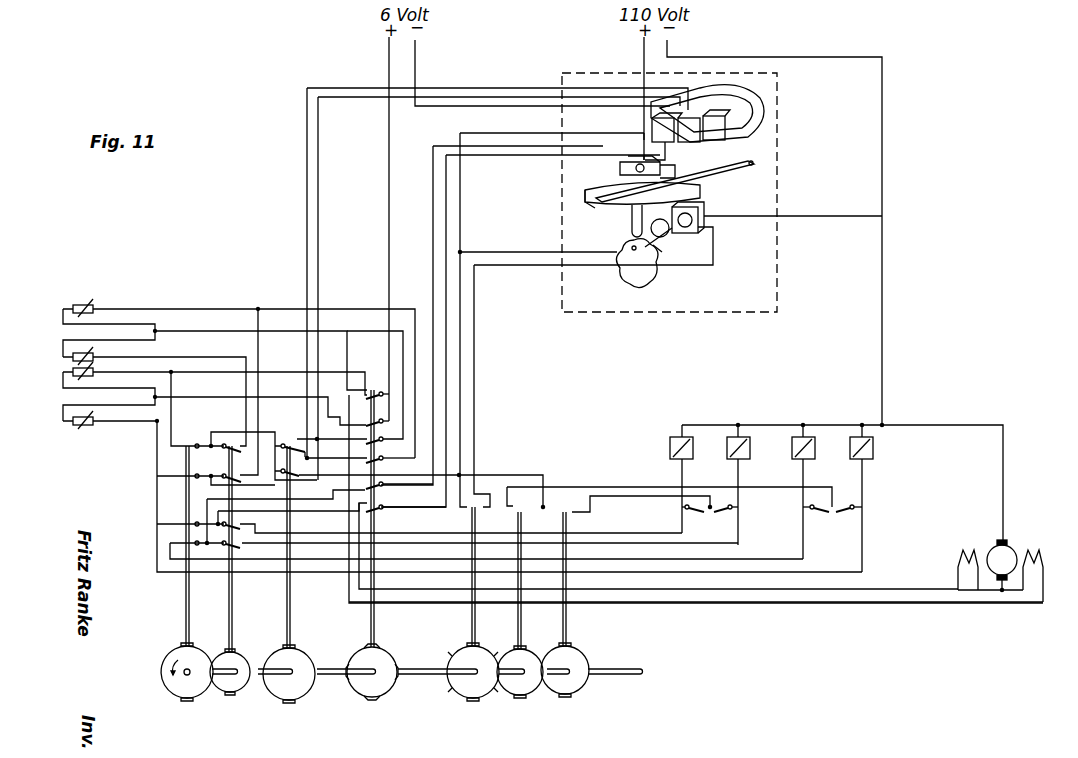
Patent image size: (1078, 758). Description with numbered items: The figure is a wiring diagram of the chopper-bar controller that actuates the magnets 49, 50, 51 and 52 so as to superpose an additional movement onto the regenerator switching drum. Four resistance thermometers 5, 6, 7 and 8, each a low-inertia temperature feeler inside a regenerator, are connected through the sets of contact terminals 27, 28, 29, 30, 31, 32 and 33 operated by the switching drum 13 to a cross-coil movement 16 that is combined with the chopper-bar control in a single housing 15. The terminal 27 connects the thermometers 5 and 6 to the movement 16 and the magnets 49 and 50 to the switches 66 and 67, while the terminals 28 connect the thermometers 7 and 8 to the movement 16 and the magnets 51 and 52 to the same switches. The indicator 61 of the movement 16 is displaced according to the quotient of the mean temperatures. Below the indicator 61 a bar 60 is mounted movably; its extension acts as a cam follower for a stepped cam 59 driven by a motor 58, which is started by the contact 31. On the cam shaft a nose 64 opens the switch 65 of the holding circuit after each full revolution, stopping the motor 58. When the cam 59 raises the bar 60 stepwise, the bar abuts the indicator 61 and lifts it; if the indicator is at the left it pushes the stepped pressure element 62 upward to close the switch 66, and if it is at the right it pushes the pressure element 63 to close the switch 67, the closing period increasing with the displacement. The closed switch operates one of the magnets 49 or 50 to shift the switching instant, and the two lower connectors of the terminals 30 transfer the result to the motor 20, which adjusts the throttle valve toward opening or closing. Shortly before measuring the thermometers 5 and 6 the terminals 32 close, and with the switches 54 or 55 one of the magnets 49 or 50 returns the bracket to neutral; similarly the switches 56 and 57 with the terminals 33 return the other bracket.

The resistance thermometer 5 is at (72, 425).
The resistance thermometer 6 is at (72, 372).
The resistance thermometer 7 is at (72, 355).
The resistance thermometer 8 is at (72, 305).
The switching drum 13 is at (614, 668).
The regulator housing 15 is at (735, 313).
The cross-coil movement 16 is at (758, 110).
The motor 20 is at (1015, 551).
The contact terminals 27 is at (186, 630).
The contact terminals 28 is at (229, 635).
The contact terminals 29 is at (288, 635).
The contact terminals 30 is at (371, 635).
The contact terminals 31 is at (472, 636).
The contact terminals 32 is at (518, 636).
The contact terminals 33 is at (563, 636).
The magnet 49 is at (802, 459).
The magnet 50 is at (861, 459).
The magnet 51 is at (679, 459).
The magnet 52 is at (737, 459).
The switch 54 is at (815, 512).
The switch 55 is at (843, 512).
The switch 56 is at (690, 512).
The switch 57 is at (722, 512).
The motor 58 is at (704, 213).
The cam 59 is at (624, 268).
The bar 60 is at (633, 213).
The indicator 61 is at (603, 205).
The pressure element 62 is at (619, 173).
The pressure element 63 is at (668, 177).
The nose 64 is at (668, 236).
The switch 65 is at (660, 250).
The switch 66 is at (636, 156).
The switch 67 is at (685, 160).